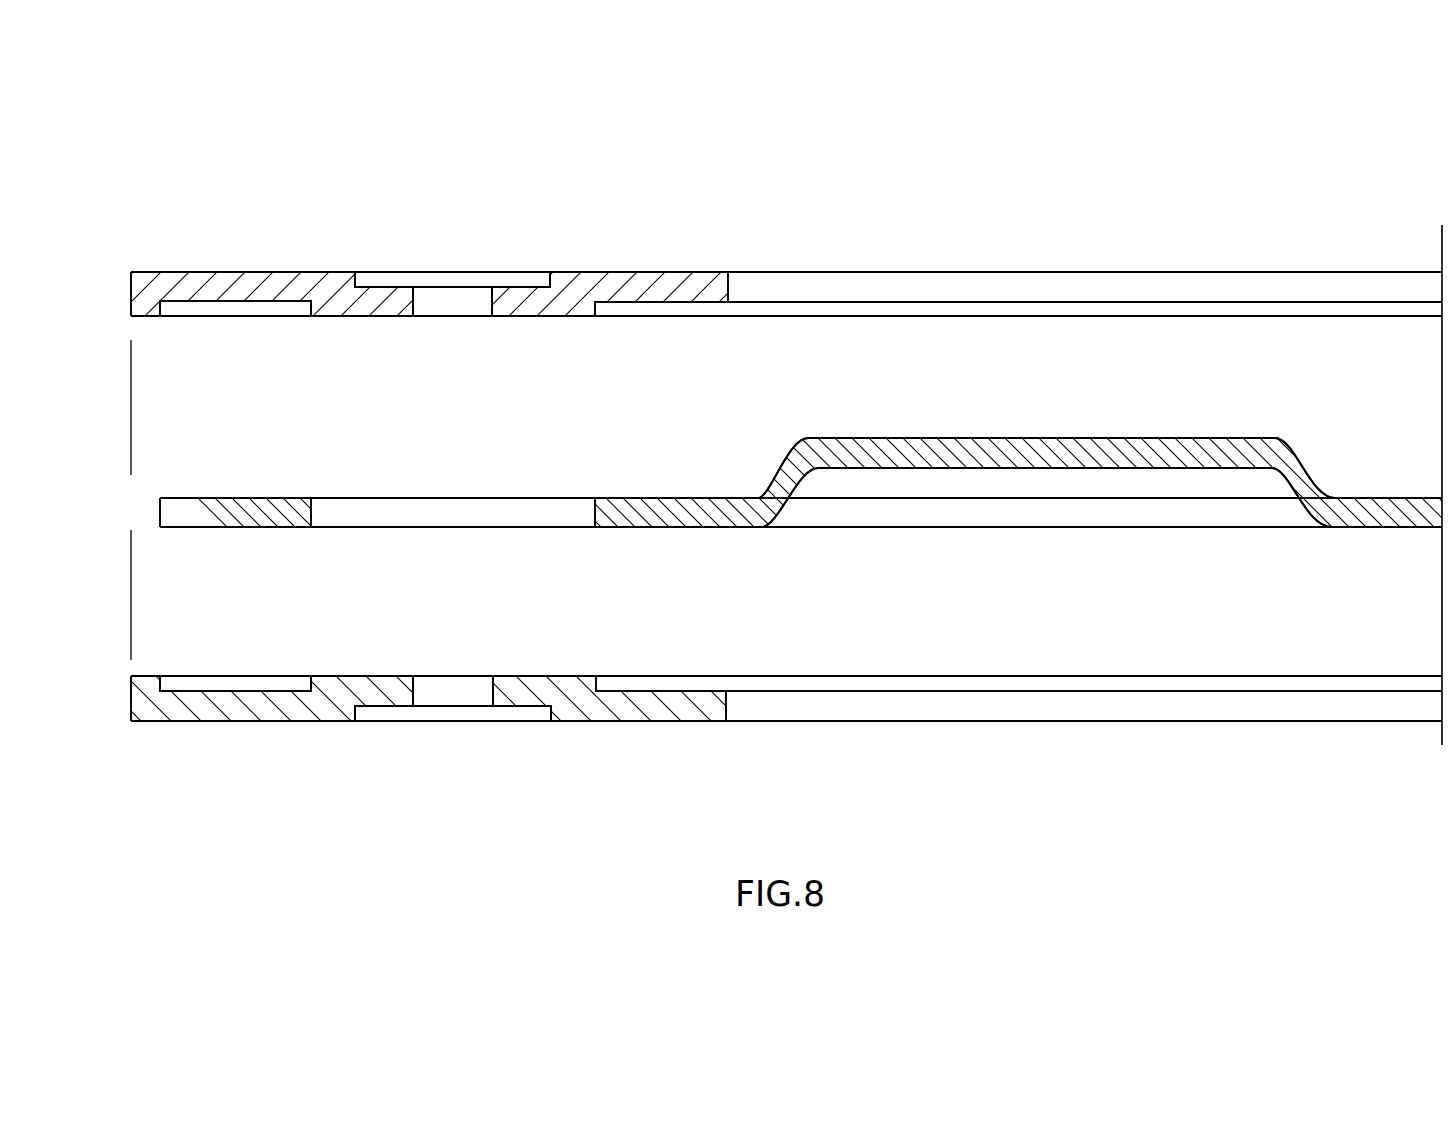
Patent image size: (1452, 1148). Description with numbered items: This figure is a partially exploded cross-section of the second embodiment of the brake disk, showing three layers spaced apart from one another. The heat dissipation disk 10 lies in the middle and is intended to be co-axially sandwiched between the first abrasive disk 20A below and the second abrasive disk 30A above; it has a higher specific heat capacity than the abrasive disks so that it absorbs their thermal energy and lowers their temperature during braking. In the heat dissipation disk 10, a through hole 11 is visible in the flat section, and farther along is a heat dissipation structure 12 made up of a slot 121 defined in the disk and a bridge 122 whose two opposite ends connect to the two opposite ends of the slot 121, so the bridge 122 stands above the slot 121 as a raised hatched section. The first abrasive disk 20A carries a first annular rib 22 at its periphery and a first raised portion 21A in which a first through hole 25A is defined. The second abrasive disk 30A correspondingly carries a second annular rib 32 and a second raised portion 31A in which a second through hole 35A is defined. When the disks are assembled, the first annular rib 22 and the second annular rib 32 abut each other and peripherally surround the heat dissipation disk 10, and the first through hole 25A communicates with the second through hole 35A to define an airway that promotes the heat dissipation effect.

The second abrasive disk 30A is at (669, 251).
The second through hole 35A is at (443, 302).
The second raised portion 31A is at (386, 308).
The second annular rib 32 is at (159, 318).
The heat dissipation disk 10 is at (668, 520).
The through hole 11 is at (465, 513).
The heat dissipation structure 12 is at (946, 410).
The bridge 122 is at (1033, 438).
The slot 121 is at (1090, 485).
The first abrasive disk 20A is at (653, 743).
The first raised portion 21A is at (527, 684).
The first annular rib 22 is at (145, 676).
The first through hole 25A is at (448, 694).